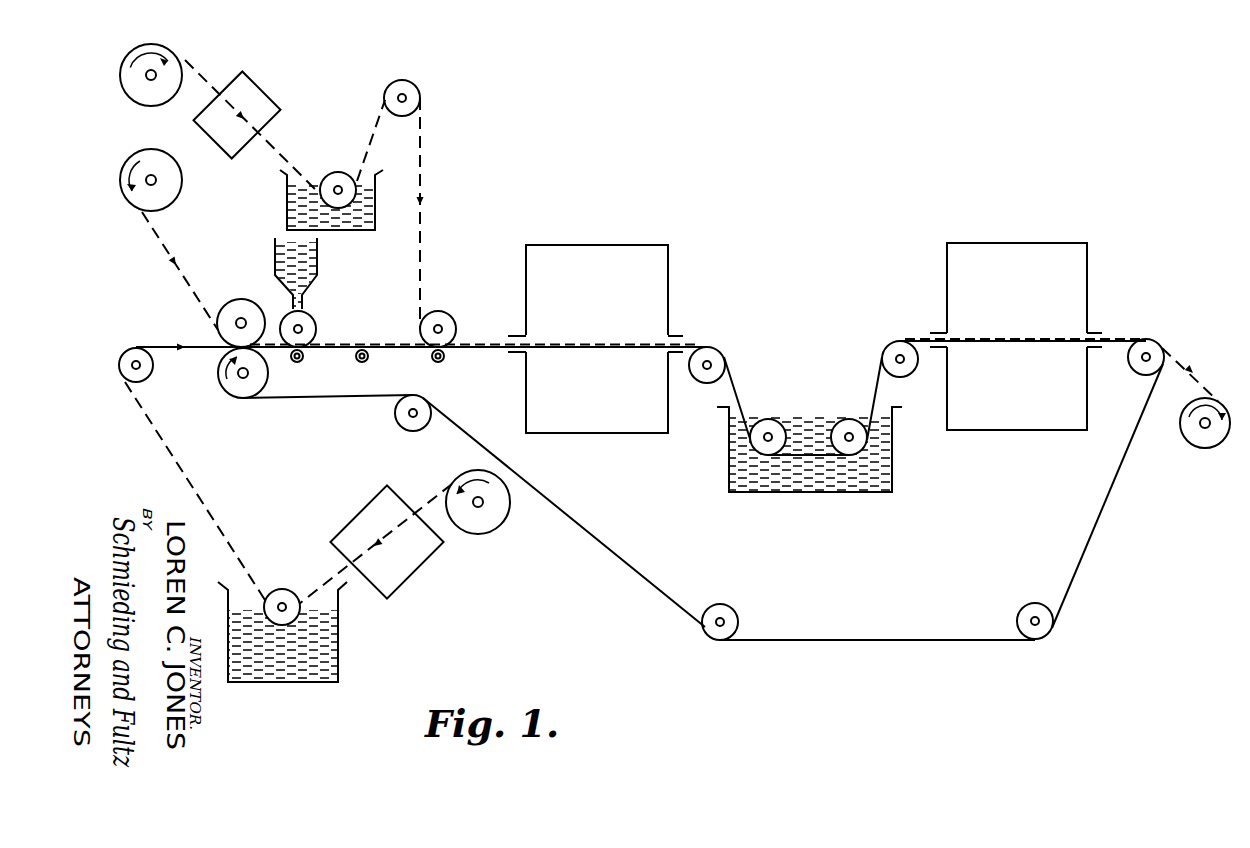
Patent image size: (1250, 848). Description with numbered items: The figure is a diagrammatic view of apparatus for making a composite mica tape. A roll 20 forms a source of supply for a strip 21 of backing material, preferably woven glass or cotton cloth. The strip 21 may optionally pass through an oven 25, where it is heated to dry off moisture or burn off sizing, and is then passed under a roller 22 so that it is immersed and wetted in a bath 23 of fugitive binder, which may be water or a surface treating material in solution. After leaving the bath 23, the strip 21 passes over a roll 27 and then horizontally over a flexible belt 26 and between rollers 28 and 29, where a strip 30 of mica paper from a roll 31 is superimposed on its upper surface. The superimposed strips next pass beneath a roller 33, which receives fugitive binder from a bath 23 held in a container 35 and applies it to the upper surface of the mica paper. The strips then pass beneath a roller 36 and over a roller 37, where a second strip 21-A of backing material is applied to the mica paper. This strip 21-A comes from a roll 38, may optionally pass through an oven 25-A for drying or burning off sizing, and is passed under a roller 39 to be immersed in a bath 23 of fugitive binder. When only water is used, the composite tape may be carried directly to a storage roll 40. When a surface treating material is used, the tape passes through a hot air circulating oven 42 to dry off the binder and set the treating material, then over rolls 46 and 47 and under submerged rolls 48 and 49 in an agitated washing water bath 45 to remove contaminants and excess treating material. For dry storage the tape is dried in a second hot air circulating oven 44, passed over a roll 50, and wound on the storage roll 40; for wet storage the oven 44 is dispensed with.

The roll 20 is at (485, 517).
The strip of backing material 21 is at (275, 352).
The second strip of backing material 21-A is at (198, 74).
The roller 22 is at (282, 592).
The bath 23 is at (366, 216).
The oven 25 is at (352, 523).
The oven 25-A is at (266, 101).
The flexible belt 26 is at (383, 352).
The roll 27 is at (131, 348).
The roller 28 is at (230, 307).
The roller 29 is at (233, 391).
The strip of mica paper 30 is at (153, 240).
The roll 31 is at (180, 180).
The roller 33 is at (313, 327).
The container 35 is at (318, 250).
The roller 36 is at (428, 313).
The roller 37 is at (433, 358).
The roll 38 is at (138, 98).
The roller 39 is at (332, 178).
The storage roll 40 is at (1190, 427).
The hot air circulating oven 42 is at (630, 255).
The second hot air circulating oven 44 is at (1075, 262).
The washing water bath 45 is at (827, 482).
The roll 46 is at (695, 373).
The roll 47 is at (897, 345).
The roll 48 is at (770, 418).
The roll 49 is at (845, 423).
The roll 50 is at (1133, 357).